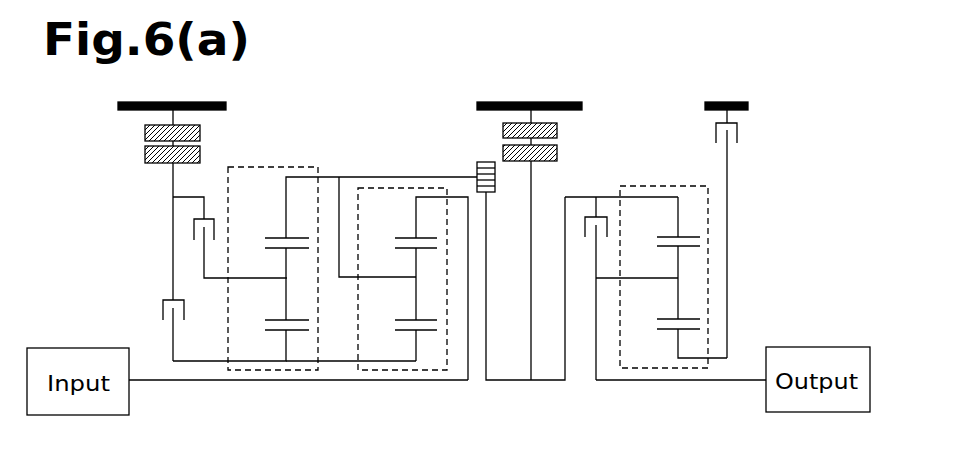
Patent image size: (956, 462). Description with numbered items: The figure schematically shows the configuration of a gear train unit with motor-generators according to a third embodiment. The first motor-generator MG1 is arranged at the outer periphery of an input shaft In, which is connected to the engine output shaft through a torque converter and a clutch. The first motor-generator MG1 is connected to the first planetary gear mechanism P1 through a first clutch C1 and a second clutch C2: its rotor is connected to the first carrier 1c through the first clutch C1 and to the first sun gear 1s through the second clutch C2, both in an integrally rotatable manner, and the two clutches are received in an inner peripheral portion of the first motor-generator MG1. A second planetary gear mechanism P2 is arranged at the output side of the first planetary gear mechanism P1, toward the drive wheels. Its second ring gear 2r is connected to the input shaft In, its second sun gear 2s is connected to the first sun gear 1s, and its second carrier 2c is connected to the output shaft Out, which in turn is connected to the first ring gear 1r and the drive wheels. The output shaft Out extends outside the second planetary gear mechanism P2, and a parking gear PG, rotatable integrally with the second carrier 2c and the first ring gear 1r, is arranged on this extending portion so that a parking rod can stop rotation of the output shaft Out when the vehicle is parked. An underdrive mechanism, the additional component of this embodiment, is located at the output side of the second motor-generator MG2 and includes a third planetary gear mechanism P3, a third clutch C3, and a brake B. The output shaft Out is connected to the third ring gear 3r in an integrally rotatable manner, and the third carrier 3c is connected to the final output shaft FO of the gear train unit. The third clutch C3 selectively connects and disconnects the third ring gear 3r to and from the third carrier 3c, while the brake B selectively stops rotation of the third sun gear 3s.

The first motor-generator MG1 is at (159, 201).
The second motor-generator MG2 is at (543, 241).
The first clutch C1 is at (194, 232).
The second clutch C2 is at (163, 310).
The third clutch C3 is at (585, 224).
The brake B is at (740, 132).
The first planetary gear mechanism P1 is at (268, 166).
The second planetary gear mechanism P2 is at (378, 186).
The third planetary gear mechanism P3 is at (660, 184).
The parking gear PG is at (477, 165).
The first ring gear 1r is at (286, 220).
The first carrier 1c is at (286, 305).
The first sun gear 1s is at (286, 352).
The second ring gear 2r is at (416, 218).
The second carrier 2c is at (416, 303).
The second sun gear 2s is at (416, 351).
The third ring gear 3r is at (678, 218).
The third carrier 3c is at (678, 303).
The third sun gear 3s is at (678, 353).
The input shaft In is at (157, 383).
The output shaft Out is at (550, 382).
The final output shaft FO is at (743, 382).